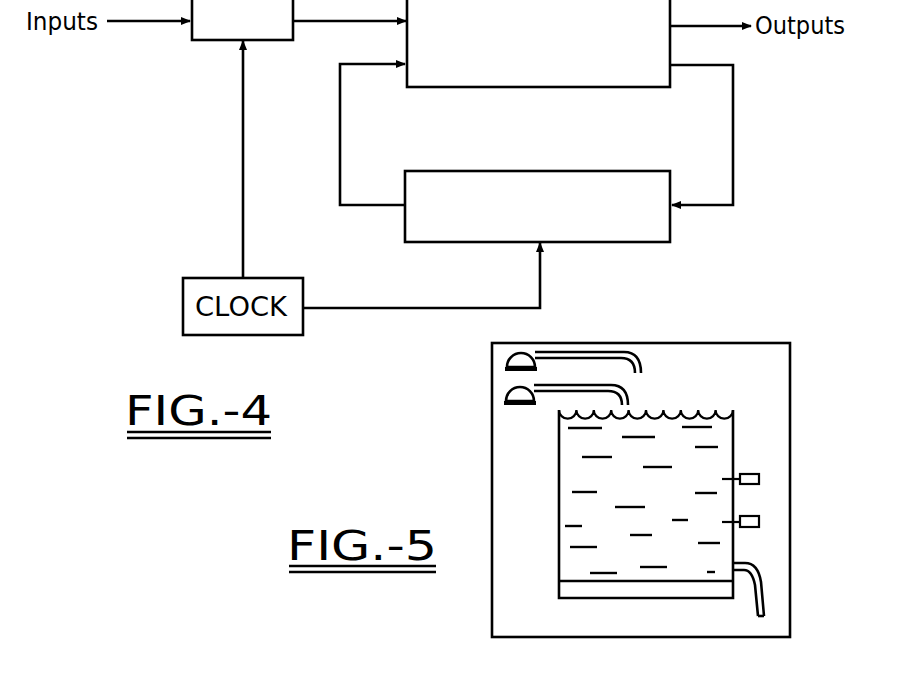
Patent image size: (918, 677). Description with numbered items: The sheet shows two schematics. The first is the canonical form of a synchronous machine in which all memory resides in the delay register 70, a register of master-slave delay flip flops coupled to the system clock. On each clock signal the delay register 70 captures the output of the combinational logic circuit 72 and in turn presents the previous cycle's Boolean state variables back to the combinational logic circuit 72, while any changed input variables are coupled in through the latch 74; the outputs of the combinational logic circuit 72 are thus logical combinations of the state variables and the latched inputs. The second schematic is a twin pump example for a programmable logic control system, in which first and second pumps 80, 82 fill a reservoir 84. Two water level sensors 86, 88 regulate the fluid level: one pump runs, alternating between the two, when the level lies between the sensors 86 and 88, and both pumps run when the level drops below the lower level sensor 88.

In FIG. 4, the delay register 70 is at (557, 171).
In FIG. 4, the combinational logic circuit 72 is at (523, 87).
In FIG. 4, the latch 74 is at (203, 40).
In FIG. 5, the first pump 80 is at (607, 352).
In FIG. 5, the second pump 82 is at (507, 388).
In FIG. 5, the reservoir 84 is at (559, 487).
In FIG. 5, the water level sensor 86 is at (759, 474).
In FIG. 5, the lower level sensor 88 is at (759, 516).